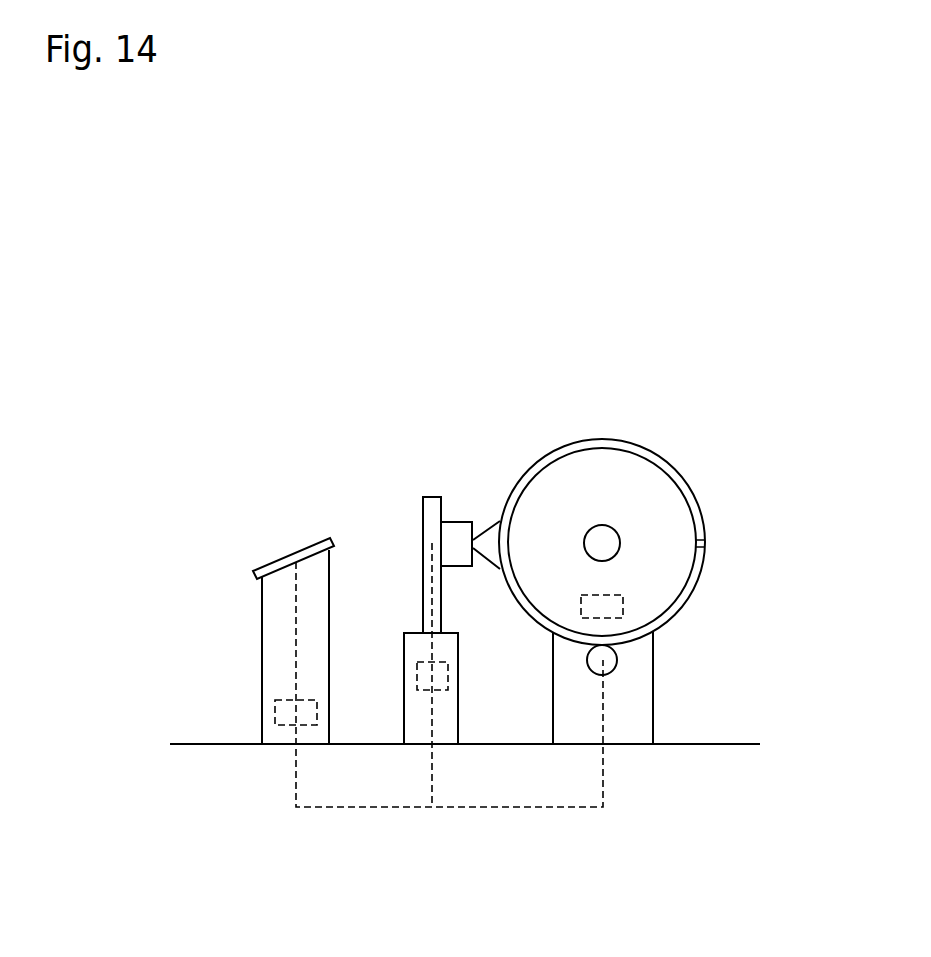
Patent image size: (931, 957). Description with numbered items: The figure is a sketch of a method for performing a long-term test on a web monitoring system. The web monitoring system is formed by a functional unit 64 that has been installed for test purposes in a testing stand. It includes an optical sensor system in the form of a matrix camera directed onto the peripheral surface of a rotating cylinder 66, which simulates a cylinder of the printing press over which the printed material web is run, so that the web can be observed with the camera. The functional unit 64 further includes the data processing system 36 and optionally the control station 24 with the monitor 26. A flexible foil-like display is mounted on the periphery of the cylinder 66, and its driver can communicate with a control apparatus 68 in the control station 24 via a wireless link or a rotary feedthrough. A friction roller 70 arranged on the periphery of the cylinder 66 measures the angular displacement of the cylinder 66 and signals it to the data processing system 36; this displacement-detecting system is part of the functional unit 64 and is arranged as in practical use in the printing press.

The functional unit 64 is at (430, 350).
The control station 24 is at (262, 662).
The monitor 26 is at (272, 562).
The control apparatus 68 is at (275, 716).
The data processing system 36 is at (438, 677).
The rotating cylinder 66 is at (663, 502).
The friction roller 70 is at (605, 662).